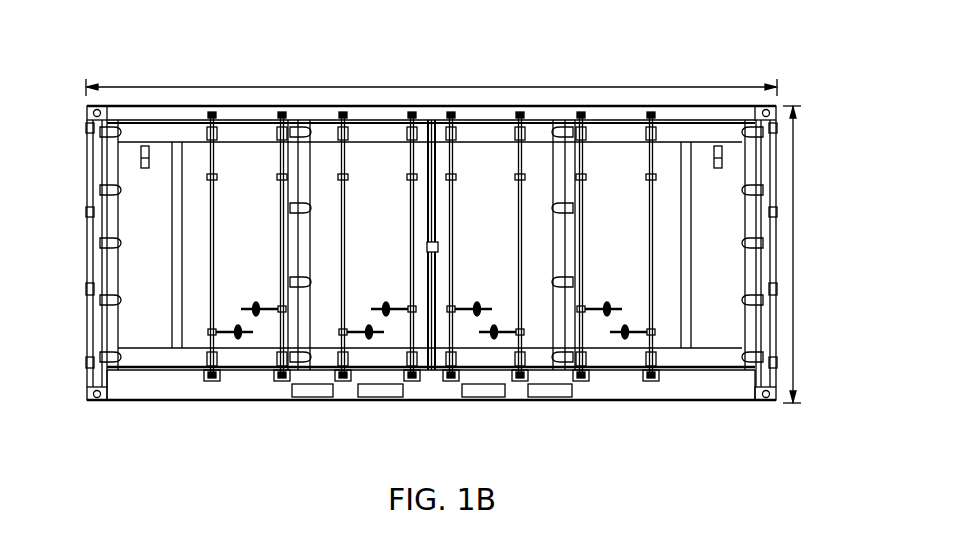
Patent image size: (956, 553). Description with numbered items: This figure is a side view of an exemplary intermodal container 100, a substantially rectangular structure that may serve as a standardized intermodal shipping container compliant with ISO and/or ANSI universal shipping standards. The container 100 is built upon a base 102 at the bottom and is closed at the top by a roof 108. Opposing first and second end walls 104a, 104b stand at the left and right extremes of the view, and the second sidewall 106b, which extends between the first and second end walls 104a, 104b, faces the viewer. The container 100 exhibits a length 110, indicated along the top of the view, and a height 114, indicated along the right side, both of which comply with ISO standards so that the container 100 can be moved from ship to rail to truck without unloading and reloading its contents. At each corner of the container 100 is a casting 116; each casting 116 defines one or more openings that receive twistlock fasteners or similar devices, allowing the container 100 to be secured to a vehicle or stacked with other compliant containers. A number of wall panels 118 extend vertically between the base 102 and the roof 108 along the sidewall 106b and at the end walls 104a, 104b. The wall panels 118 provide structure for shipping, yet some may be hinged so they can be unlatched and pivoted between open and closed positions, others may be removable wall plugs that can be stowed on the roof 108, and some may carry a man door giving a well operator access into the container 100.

The intermodal container 100 is at (206, 76).
The base 102 is at (338, 402).
The first end wall 104a is at (85, 233).
The second end wall 104b is at (782, 190).
The second sidewall 106b is at (483, 123).
The roof 108 is at (320, 106).
The length 110 is at (625, 87).
The height 114 is at (793, 262).
The casting 116 is at (763, 112).
The wall panel 118 is at (263, 337).